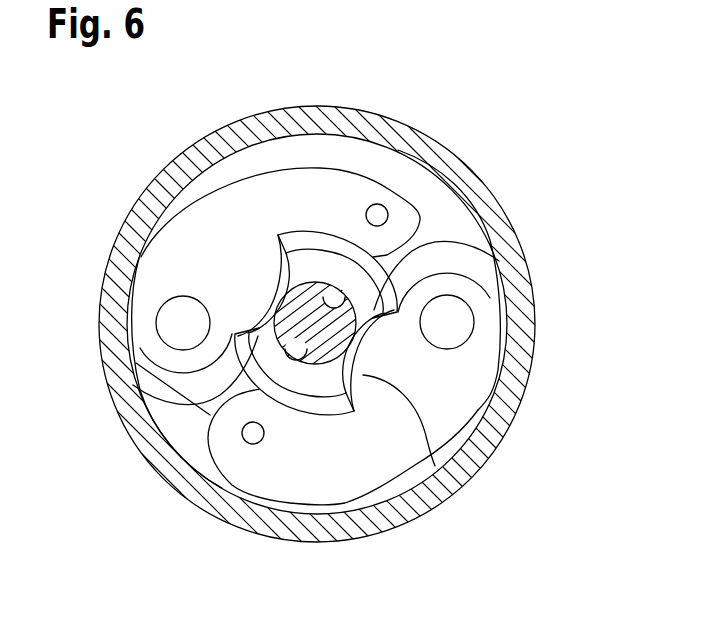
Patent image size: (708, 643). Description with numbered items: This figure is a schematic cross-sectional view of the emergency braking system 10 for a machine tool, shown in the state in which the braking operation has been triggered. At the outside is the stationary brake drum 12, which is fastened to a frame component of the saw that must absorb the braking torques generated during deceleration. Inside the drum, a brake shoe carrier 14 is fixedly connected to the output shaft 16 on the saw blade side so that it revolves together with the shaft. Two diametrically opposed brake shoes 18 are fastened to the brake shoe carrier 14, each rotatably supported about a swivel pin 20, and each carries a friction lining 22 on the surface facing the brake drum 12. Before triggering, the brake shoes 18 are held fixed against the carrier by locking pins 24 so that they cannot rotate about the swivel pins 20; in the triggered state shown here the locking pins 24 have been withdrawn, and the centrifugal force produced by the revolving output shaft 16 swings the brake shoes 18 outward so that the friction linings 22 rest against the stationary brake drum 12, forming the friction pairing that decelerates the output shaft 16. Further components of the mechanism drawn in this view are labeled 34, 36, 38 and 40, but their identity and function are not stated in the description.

The emergency braking system 10 is at (503, 97).
The brake drum 12 is at (459, 178).
The brake shoe carrier 14 is at (235, 337).
The output shaft 16 is at (313, 258).
The brake shoe 18 is at (265, 277).
The swivel pin 20 is at (183, 323).
The friction lining 22 is at (263, 160).
The locking pin 24 is at (378, 214).
The hub 34 is at (347, 340).
The chamber wall 36 is at (190, 243).
The vane 38 is at (293, 260).
The shaft 40 is at (355, 322).